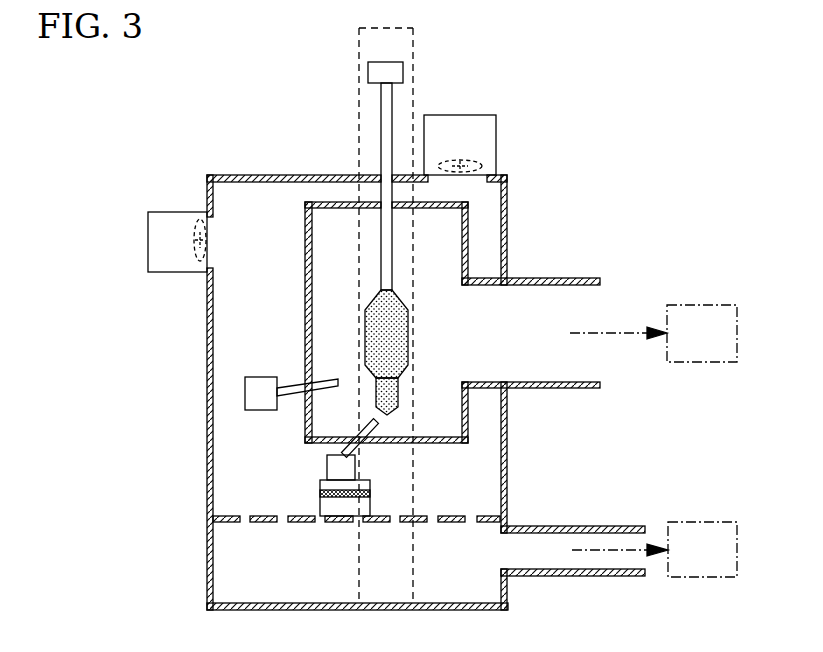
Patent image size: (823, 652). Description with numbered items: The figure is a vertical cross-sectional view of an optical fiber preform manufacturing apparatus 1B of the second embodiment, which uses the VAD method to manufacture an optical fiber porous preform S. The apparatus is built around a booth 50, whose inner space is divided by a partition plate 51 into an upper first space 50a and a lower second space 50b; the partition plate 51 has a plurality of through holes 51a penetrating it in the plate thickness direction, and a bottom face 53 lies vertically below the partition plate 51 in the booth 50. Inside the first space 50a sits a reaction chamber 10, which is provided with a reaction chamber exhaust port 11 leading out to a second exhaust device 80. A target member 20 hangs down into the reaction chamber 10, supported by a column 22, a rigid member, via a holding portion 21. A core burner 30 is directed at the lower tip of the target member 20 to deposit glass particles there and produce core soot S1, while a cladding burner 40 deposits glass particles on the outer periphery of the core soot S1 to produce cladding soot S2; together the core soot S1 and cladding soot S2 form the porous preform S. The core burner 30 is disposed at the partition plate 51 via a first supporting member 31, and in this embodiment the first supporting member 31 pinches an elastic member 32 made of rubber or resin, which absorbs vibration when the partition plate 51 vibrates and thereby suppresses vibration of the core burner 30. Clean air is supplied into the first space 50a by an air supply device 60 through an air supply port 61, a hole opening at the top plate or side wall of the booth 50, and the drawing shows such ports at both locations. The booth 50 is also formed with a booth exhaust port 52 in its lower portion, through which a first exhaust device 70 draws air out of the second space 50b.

The optical fiber preform manufacturing apparatus 1B is at (600, 62).
The reaction chamber 10 is at (508, 222).
The reaction chamber exhaust port 11 is at (575, 285).
The target member 20 is at (385, 262).
The holding portion 21 is at (395, 72).
The column 22 is at (408, 43).
The core burner 30 is at (372, 414).
The first supporting member 31 is at (323, 507).
The elastic member 32 is at (318, 494).
The cladding burner 40 is at (337, 378).
The booth 50 is at (203, 285).
The first space 50a is at (291, 234).
The second space 50b is at (304, 566).
The partition plate 51 is at (453, 514).
The through holes 51a is at (472, 518).
The booth exhaust port 52 is at (596, 530).
The bottom face 53 is at (243, 602).
The air supply device 60 is at (430, 128).
The air supply port 61 is at (214, 222).
The first exhaust device 70 is at (700, 522).
The second exhaust device 80 is at (698, 305).
The optical fiber porous preform S is at (438, 352).
The core soot S1 is at (400, 382).
The cladding soot S2 is at (402, 335).